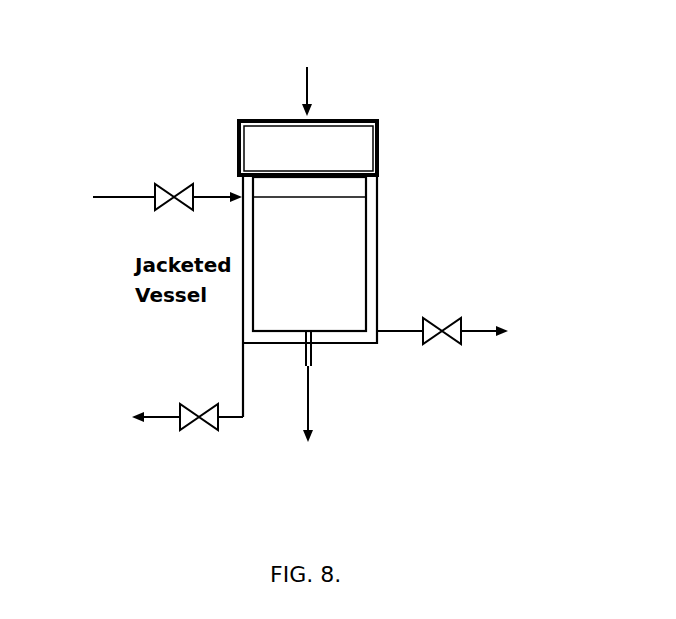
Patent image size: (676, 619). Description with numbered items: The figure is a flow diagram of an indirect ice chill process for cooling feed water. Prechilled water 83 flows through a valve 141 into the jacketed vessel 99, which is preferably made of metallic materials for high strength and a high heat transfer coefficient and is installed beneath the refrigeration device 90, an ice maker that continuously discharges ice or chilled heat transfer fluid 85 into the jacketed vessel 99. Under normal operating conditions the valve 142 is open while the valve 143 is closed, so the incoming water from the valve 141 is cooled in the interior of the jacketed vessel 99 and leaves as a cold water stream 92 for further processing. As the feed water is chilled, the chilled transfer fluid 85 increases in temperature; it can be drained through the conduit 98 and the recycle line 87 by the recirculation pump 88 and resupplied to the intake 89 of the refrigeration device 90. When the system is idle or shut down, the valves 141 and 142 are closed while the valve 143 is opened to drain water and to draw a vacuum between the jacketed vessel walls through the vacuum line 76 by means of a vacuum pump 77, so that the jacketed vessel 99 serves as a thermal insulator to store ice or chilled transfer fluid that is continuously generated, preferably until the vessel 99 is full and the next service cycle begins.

The intake 89 is at (310, 92).
The refrigeration device 90 is at (380, 140).
The jacketed vessel 99 is at (377, 220).
The ice or chilled heat transfer fluid 85 is at (337, 260).
The prechilled water 83 is at (112, 197).
The valve 141 is at (173, 197).
The valve 142 is at (440, 331).
The cold water stream 92 is at (482, 331).
The vacuum line 76 is at (243, 383).
The valve 143 is at (190, 425).
The conduit 98 is at (311, 352).
The recycle line 87 is at (308, 388).
The vacuum pump 77 is at (72, 432).
The recirculation pump 88 is at (342, 492).